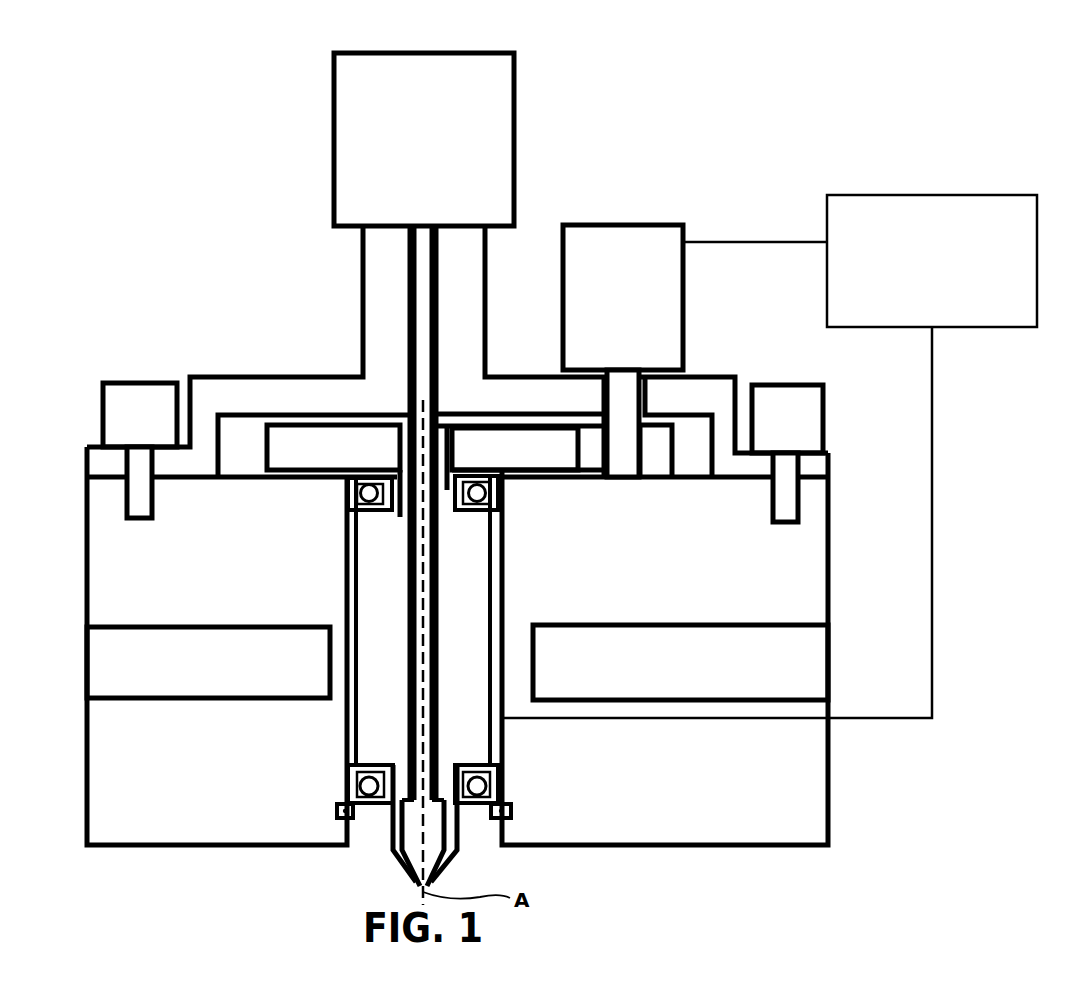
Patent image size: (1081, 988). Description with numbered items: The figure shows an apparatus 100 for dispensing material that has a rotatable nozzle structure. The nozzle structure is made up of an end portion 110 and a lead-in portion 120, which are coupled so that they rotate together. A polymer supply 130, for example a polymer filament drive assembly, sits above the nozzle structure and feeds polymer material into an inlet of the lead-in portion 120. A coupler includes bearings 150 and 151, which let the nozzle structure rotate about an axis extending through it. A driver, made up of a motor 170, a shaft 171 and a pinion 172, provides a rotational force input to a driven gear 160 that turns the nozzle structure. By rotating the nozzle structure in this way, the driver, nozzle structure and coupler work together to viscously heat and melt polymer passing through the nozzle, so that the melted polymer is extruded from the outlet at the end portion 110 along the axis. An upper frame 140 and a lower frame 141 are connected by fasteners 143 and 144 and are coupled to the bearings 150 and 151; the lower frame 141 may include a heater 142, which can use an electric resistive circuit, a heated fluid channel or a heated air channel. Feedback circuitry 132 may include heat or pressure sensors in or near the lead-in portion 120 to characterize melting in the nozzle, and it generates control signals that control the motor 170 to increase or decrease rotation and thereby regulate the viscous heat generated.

The apparatus 100 is at (890, 110).
The end portion 110 is at (437, 872).
The lead-in portion 120 is at (470, 740).
The polymer supply 130 is at (486, 50).
The feedback circuitry 132 is at (1003, 194).
The upper frame 140 is at (485, 296).
The lower frame 141 is at (829, 598).
The heater 142 is at (803, 664).
The fastener 143 is at (110, 383).
The fastener 144 is at (780, 385).
The bearing 150 is at (478, 493).
The bearing 151 is at (490, 787).
The driven gear 160 is at (328, 450).
The motor 170 is at (684, 297).
The shaft 171 is at (622, 460).
The pinion 172 is at (663, 460).